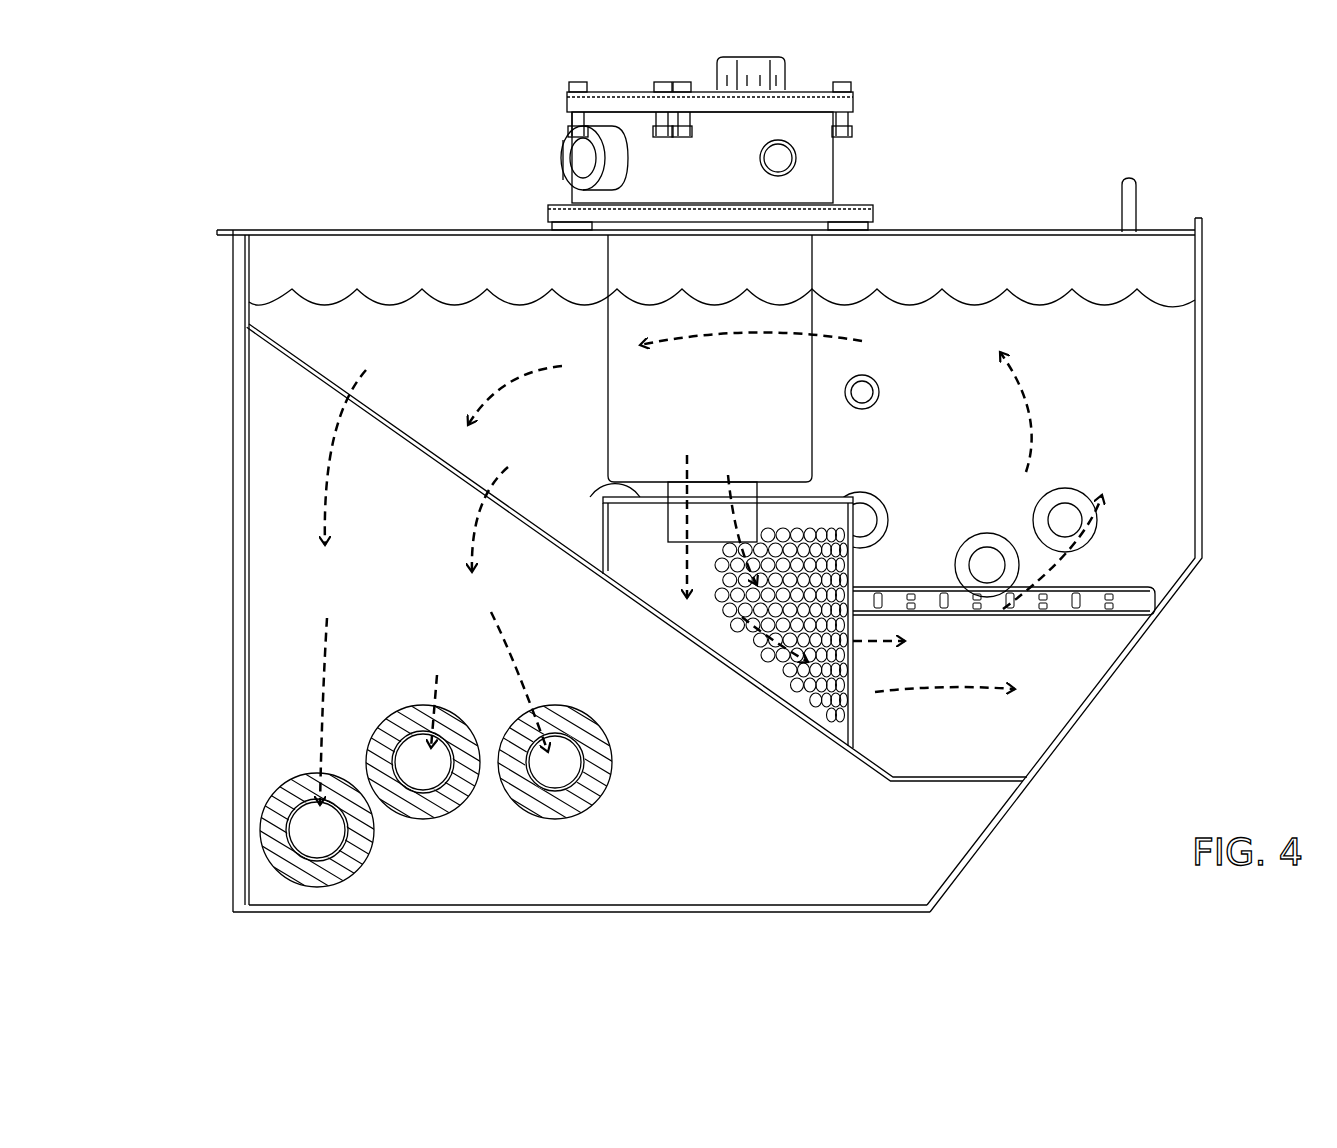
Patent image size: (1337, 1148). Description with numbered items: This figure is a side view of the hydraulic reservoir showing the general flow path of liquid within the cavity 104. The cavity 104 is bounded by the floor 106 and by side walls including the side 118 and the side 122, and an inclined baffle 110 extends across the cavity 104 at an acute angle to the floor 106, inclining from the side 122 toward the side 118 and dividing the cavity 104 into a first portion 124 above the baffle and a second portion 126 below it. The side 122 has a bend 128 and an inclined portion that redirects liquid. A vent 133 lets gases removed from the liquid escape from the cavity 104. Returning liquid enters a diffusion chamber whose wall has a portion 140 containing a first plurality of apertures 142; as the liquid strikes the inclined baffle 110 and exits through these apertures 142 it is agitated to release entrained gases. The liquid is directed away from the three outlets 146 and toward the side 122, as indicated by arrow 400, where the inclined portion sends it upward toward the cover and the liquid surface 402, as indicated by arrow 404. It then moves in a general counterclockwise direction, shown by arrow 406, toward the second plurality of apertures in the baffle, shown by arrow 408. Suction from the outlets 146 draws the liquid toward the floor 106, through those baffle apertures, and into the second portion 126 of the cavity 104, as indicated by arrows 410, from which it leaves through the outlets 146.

The cavity 104 is at (691, 560).
The floor 106 is at (345, 912).
The inclined baffle 110 is at (313, 230).
The side 118 is at (233, 663).
The side 122 is at (1150, 628).
The first portion 124 is at (975, 510).
The second portion 126 is at (691, 560).
The bend 128 is at (610, 338).
The vent 133 is at (1122, 230).
The portion of the wall 140 is at (855, 700).
The first plurality of apertures 142 is at (796, 624).
The outlets 146 is at (522, 815).
The arrow 400 is at (955, 690).
The surface 402 is at (960, 300).
The arrow 404 is at (1105, 527).
The arrow 406 is at (1030, 398).
The arrow 408 is at (505, 380).
The arrows 410 is at (475, 532).